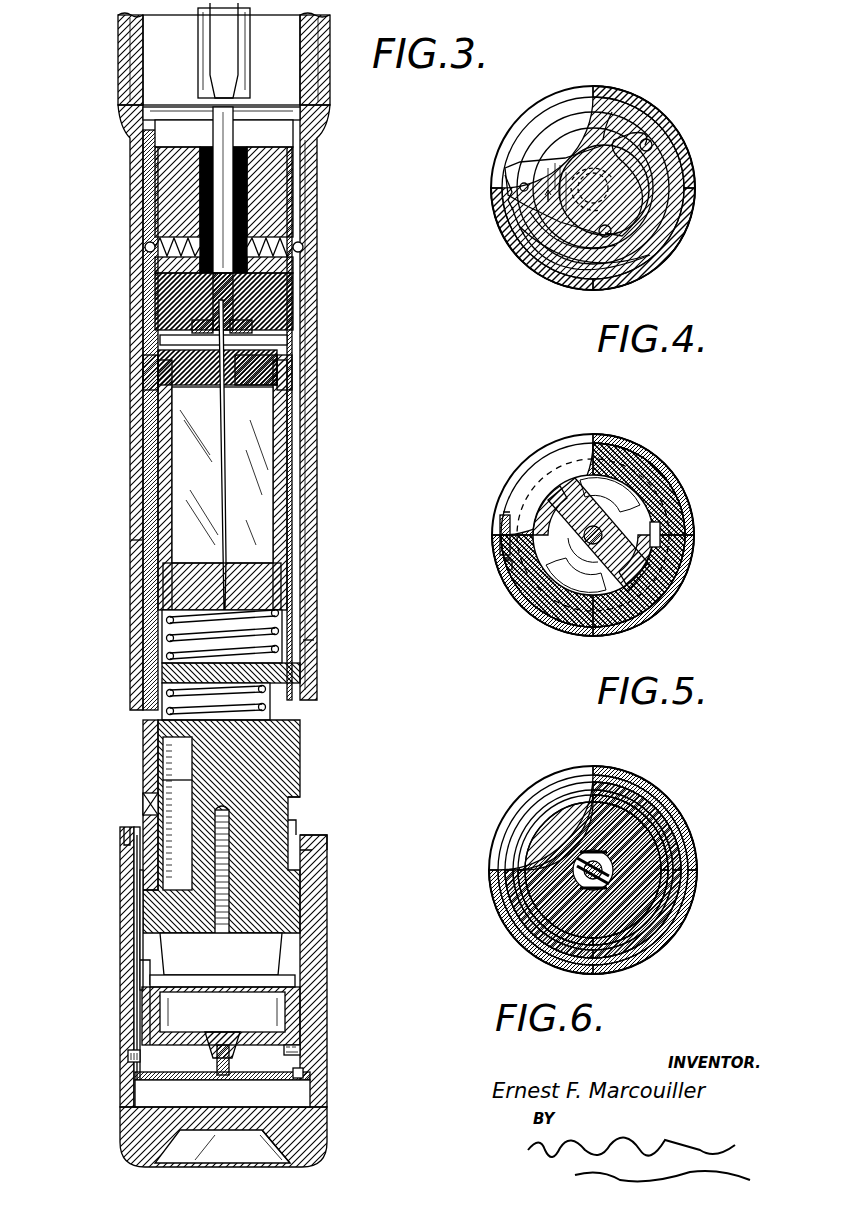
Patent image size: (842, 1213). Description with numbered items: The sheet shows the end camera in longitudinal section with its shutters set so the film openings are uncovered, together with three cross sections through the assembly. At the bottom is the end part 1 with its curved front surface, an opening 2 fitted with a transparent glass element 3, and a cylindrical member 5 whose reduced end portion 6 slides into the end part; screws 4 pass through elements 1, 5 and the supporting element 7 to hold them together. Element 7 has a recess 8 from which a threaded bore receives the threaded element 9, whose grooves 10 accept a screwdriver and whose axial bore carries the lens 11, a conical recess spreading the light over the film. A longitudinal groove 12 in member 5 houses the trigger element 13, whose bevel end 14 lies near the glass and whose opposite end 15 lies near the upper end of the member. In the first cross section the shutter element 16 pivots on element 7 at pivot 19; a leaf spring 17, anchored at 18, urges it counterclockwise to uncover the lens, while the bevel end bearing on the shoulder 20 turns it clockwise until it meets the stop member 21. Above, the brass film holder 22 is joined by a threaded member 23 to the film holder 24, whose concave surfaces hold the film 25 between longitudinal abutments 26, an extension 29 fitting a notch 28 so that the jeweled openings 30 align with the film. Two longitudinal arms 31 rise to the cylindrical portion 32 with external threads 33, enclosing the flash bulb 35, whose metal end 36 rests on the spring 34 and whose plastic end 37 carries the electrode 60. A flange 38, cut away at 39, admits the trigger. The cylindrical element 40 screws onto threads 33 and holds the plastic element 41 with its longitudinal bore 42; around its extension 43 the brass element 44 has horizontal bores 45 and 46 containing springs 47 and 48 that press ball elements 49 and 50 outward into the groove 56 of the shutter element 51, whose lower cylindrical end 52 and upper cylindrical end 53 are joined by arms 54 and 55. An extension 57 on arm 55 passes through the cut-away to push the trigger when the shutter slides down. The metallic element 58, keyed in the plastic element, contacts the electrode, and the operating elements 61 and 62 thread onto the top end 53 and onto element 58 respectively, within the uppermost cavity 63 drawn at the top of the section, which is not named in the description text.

In FIG. 3, the end part 1 is at (322, 1130).
In FIG. 4, the end part 1 is at (652, 110).
In FIG. 3, the opening 2 is at (276, 1148).
In FIG. 3, the transparent glass element 3 is at (206, 1133).
In FIG. 3, the screws 4 is at (300, 1050).
In FIG. 3, the cylindrical member 5 is at (312, 958).
In FIG. 4, the cylindrical member 5 is at (677, 200).
In FIG. 5, the cylindrical member 5 is at (612, 446).
In FIG. 3, the reduced end portion 6 is at (302, 1030).
In FIG. 4, the reduced end portion 6 is at (662, 142).
In FIG. 3, the supporting element 7 is at (298, 1002).
In FIG. 4, the supporting element 7 is at (616, 110).
In FIG. 3, the recess 8 is at (172, 1000).
In FIG. 3, the threaded element 9 is at (232, 1036).
In FIG. 3, the grooves 10 is at (218, 1040).
In FIG. 3, the lens 11 is at (232, 1081).
In FIG. 3, the groove 12 is at (145, 962).
In FIG. 3, the trigger element 13 is at (142, 902).
In FIG. 4, the trigger element 13 is at (507, 173).
In FIG. 3, the bevel end 14 is at (132, 1056).
In FIG. 4, the bevel end 14 is at (512, 208).
In FIG. 3, the opposite end 15 is at (130, 830).
In FIG. 3, the shutter element 16 is at (218, 1080).
In FIG. 4, the shutter element 16 is at (585, 162).
In FIG. 4, the leaf spring 17 is at (640, 232).
In FIG. 3, the spring connection 18 is at (304, 1077).
In FIG. 4, the spring connection 18 is at (653, 148).
In FIG. 3, the pivot 19 is at (182, 1092).
In FIG. 4, the pivot 19 is at (545, 222).
In FIG. 4, the shoulder 20 is at (548, 175).
In FIG. 4, the stop member 21 is at (650, 258).
In FIG. 3, the film holder 22 is at (200, 936).
In FIG. 3, the threaded member 23 is at (228, 922).
In FIG. 5, the threaded member 23 is at (552, 596).
In FIG. 3, the film holder 24 is at (232, 776).
In FIG. 5, the film holder 24 is at (600, 512).
In FIG. 3, the film 25 is at (192, 782).
In FIG. 5, the film 25 is at (642, 596).
In FIG. 3, the longitudinal abutments 26 is at (180, 752).
In FIG. 5, the longitudinal abutments 26 is at (540, 500).
In FIG. 3, the notch 28 is at (302, 794).
In FIG. 3, the extension 29 is at (292, 824).
In FIG. 5, the extension 29 is at (660, 532).
In FIG. 3, the openings 30 is at (146, 804).
In FIG. 3, the longitudinal arms 31 is at (137, 544).
In FIG. 3, the cylindrical portion 32 is at (150, 372).
In FIG. 3, the external threads 33 is at (165, 360).
In FIG. 3, the spring 34 is at (172, 640).
In FIG. 3, the flash bulb 35 is at (165, 458).
In FIG. 3, the metal end 36 is at (200, 590).
In FIG. 3, the plastic end 37 is at (180, 420).
In FIG. 3, the flange 38 is at (313, 853).
In FIG. 5, the flange 38 is at (678, 567).
In FIG. 3, the cut-away portion 39 is at (128, 882).
In FIG. 5, the cut-away portion 39 is at (510, 571).
In FIG. 3, the cylindrical element 40 is at (182, 300).
In FIG. 6, the cylindrical element 40 is at (614, 842).
In FIG. 3, the plastic element 41 is at (272, 302).
In FIG. 3, the longitudinal bore 42 is at (282, 340).
In FIG. 3, the extension 43 is at (205, 190).
In FIG. 6, the extension 43 is at (597, 852).
In FIG. 3, the cylindrical brass element 44 is at (178, 162).
In FIG. 6, the cylindrical brass element 44 is at (540, 868).
In FIG. 3, the horizontal bore 45 is at (178, 266).
In FIG. 3, the horizontal bore 46 is at (272, 266).
In FIG. 3, the spring 47 is at (175, 243).
In FIG. 3, the spring 48 is at (310, 222).
In FIG. 3, the ball element 49 is at (145, 247).
In FIG. 3, the ball element 50 is at (303, 247).
In FIG. 3, the shutter element 51 is at (320, 535).
In FIG. 3, the lower cylindrical end 52 is at (312, 645).
In FIG. 3, the upper cylindrical end 53 is at (131, 50).
In FIG. 6, the upper cylindrical end 53 is at (680, 884).
In FIG. 3, the longitudinal arm 54 is at (312, 422).
In FIG. 3, the longitudinal arm 55 is at (148, 502).
In FIG. 3, the groove 56 is at (302, 113).
In FIG. 3, the extension 57 is at (150, 720).
In FIG. 5, the extension 57 is at (503, 532).
In FIG. 3, the metallic element 58 is at (228, 165).
In FIG. 6, the metallic element 58 is at (592, 858).
In FIG. 3, the electrode 60 is at (282, 366).
In FIG. 3, the operating element 61 is at (122, 22).
In FIG. 6, the operating element 61 is at (678, 926).
In FIG. 3, the operating element 62 is at (238, 42).
In FIG. 3, the cap cavity 63 is at (200, 68).